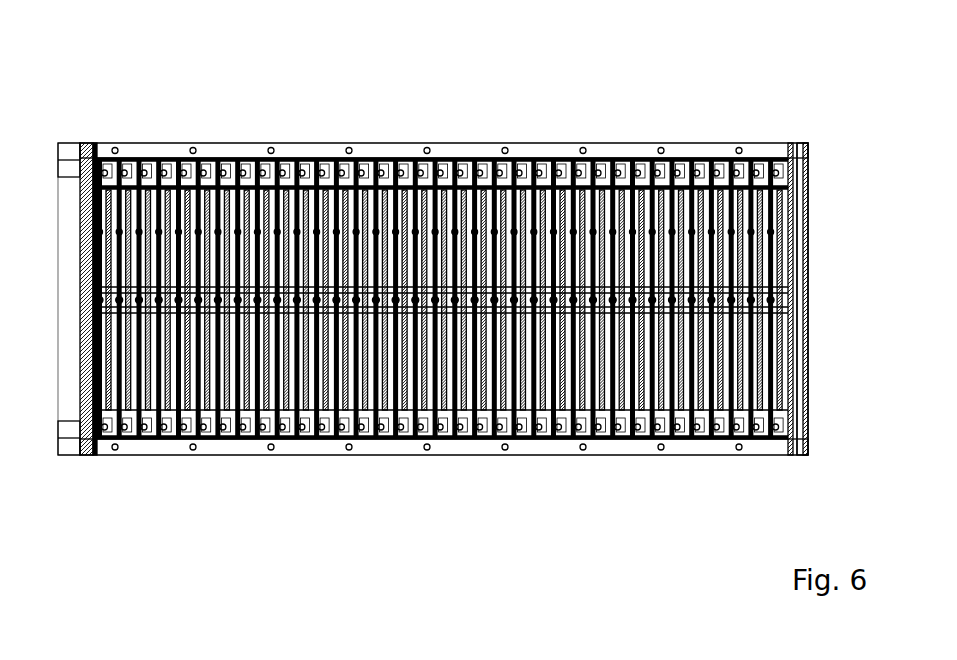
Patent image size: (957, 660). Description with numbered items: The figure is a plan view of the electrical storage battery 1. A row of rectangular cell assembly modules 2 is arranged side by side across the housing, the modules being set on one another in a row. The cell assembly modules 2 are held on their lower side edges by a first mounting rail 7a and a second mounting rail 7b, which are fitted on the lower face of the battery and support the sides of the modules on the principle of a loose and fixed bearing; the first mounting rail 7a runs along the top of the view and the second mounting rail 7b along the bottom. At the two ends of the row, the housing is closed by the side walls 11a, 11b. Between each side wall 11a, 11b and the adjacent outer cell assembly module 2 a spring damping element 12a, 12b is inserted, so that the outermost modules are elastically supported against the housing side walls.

The electrical storage battery 1 is at (148, 48).
The first mounting rail 7a is at (457, 142).
The second mounting rail 7b is at (462, 456).
The spring damping element 12a is at (88, 233).
The spring damping element 12b is at (795, 212).
The side wall 11a is at (90, 287).
The side wall 11b is at (805, 322).
The cell assembly module 2 is at (105, 385).